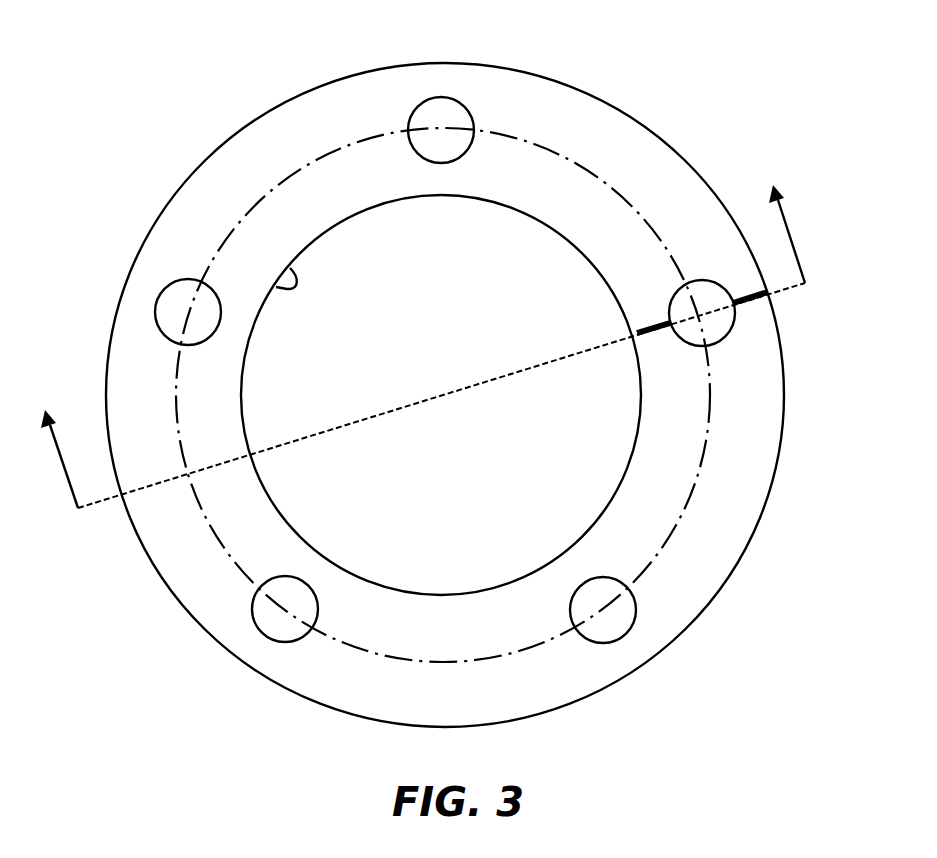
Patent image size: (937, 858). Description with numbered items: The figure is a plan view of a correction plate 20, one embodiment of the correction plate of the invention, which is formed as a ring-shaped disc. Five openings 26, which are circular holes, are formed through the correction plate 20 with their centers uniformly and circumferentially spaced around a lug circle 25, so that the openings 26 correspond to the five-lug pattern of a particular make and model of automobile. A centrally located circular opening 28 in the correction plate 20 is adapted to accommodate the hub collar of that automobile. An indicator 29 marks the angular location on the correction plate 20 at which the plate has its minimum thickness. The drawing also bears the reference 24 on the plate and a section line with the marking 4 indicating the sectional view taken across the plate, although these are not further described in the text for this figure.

The correction plate 20 is at (690, 92).
The flange body / central opening 24 is at (708, 580).
The lug circle 25 is at (643, 213).
The openings 26 is at (157, 303).
The opening 28 is at (290, 268).
The indicator 29 is at (733, 298).
The section line 4- 4 is at (428, 360).